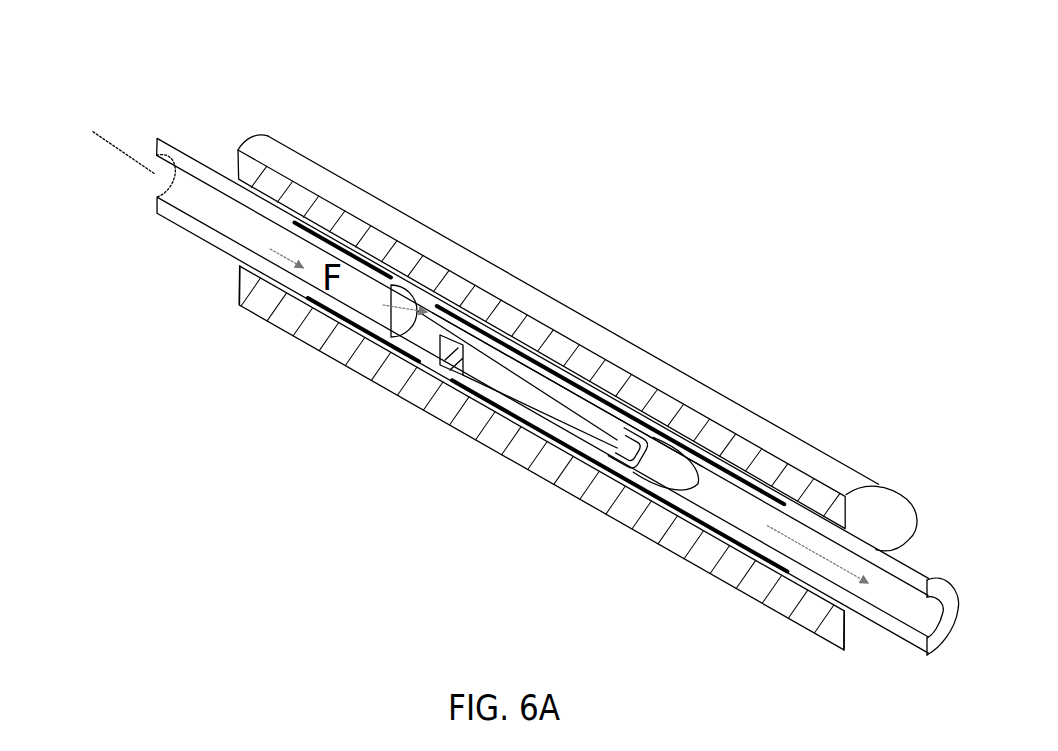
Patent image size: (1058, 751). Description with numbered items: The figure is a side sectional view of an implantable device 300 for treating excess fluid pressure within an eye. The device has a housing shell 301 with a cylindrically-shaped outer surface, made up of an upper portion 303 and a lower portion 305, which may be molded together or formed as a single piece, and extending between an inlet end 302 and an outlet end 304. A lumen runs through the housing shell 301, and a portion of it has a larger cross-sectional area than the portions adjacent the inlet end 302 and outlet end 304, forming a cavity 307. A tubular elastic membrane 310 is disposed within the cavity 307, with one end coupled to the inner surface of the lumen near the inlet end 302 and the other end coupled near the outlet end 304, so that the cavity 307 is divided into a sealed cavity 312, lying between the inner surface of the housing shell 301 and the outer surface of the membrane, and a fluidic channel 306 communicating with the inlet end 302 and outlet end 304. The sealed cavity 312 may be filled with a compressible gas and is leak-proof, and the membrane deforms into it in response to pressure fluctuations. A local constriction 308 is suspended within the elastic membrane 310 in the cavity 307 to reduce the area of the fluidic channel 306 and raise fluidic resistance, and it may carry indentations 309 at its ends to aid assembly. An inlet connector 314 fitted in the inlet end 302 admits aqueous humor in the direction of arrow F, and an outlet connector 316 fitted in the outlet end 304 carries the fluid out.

The implantable device 300 is at (756, 328).
The housing shell 301 is at (623, 540).
The inlet end 302 is at (240, 262).
The upper portion 303 is at (330, 183).
The outlet end 304 is at (855, 617).
The lower portion 305 is at (290, 297).
The fluidic channel 306 is at (620, 418).
The cavity 307 is at (415, 338).
The local constriction 308 is at (540, 408).
The indentations 309 is at (412, 372).
The tubular elastic membrane 310 is at (453, 307).
The sealed cavity 312 is at (572, 362).
The inlet connector 314 is at (190, 148).
The outlet connector 316 is at (926, 578).